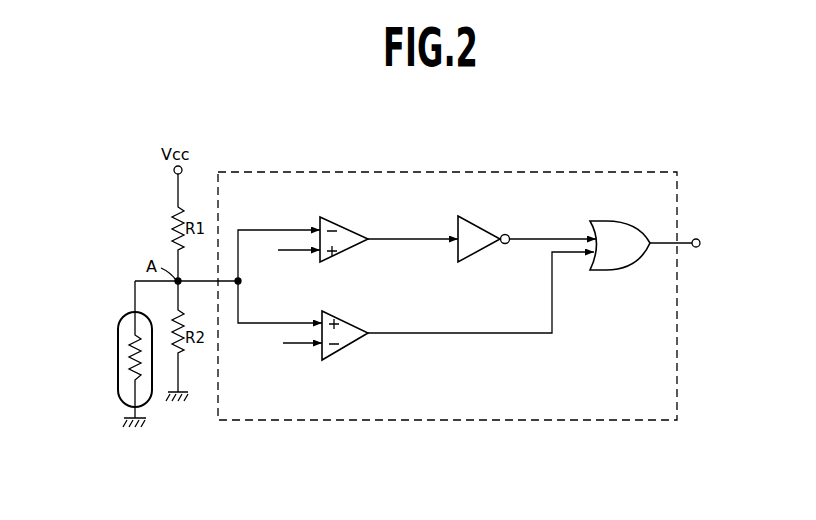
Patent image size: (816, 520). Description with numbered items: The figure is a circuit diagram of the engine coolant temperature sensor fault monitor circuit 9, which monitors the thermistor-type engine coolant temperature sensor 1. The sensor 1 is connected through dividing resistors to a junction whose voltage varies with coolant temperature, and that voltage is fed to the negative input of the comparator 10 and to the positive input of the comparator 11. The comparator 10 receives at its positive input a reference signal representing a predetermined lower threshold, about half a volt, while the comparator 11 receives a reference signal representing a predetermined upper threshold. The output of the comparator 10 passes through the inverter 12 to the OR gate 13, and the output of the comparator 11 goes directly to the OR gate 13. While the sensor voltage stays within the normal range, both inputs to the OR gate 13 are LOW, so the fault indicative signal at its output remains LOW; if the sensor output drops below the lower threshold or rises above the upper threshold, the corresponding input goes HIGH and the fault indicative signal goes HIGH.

The engine coolant temperature sensor 1 is at (121, 322).
The engine coolant temperature sensor fault monitor circuit 9 is at (529, 172).
The comparator 10 is at (346, 222).
The comparator 11 is at (353, 322).
The inverter 12 is at (490, 228).
The OR gate 13 is at (636, 228).